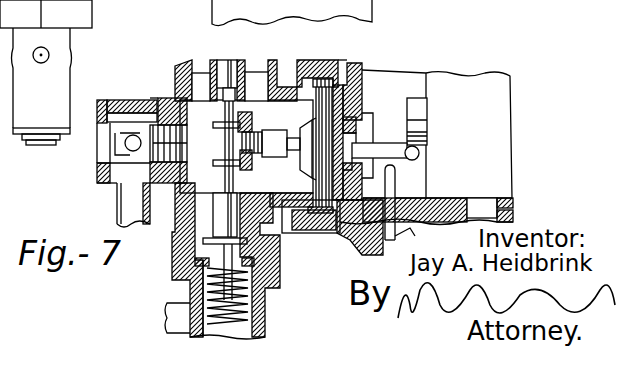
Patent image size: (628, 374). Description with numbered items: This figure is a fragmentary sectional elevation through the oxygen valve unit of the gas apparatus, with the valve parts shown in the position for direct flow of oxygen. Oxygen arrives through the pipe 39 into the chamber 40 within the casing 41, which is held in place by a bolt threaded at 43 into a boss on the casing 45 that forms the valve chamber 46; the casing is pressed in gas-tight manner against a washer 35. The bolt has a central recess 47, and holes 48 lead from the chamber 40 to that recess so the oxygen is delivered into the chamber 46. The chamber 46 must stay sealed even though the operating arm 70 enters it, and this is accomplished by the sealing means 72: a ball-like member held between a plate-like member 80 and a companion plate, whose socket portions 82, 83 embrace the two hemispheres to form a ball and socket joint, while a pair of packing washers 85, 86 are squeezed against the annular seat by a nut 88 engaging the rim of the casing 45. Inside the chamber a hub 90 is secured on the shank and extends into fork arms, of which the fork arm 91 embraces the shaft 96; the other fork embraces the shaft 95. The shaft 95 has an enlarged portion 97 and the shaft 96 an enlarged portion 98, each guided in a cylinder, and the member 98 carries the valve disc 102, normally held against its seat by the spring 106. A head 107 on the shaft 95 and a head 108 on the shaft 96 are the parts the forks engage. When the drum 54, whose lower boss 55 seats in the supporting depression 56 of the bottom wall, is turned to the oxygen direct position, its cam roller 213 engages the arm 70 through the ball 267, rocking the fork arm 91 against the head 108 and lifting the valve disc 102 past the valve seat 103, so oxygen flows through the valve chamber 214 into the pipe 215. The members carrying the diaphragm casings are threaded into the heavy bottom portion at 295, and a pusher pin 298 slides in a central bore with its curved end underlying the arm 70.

The washer 35 is at (105, 190).
The pipe 39 is at (117, 210).
The chamber 40 is at (135, 113).
The casing 41 is at (115, 98).
The threaded portion 43 is at (163, 98).
The casing 45 is at (270, 60).
The valve chamber 46 is at (280, 105).
The central recess 47 is at (115, 143).
The holes 48 is at (140, 153).
The drum 54 is at (480, 85).
The lower boss 55 is at (513, 220).
The supporting depression 56 is at (513, 205).
The operating arm 70 is at (402, 142).
The sealing means 72 is at (318, 130).
The plate-like member 80 is at (365, 65).
The socket portion 82 is at (357, 127).
The socket portion 83 is at (313, 164).
The packing washer 85 is at (341, 215).
The packing washer 86 is at (316, 80).
The nut 88 is at (327, 68).
The hub 90 is at (269, 132).
The fork arm 91 is at (244, 168).
The shaft 95 is at (227, 109).
The shaft 96 is at (224, 180).
The enlarged portion 97 is at (228, 60).
The enlarged portion 98 is at (180, 220).
The valve disc 102 is at (250, 243).
The valve seat 103 is at (192, 250).
The spring 106 is at (200, 288).
The head 107 is at (186, 129).
The head 108 is at (187, 145).
The cam roller 213 is at (418, 108).
The valve chamber 214 is at (252, 310).
The pipe 215 is at (166, 316).
The ball 267 is at (420, 155).
The threaded portion 295 is at (408, 231).
The pusher pin 298 is at (396, 186).